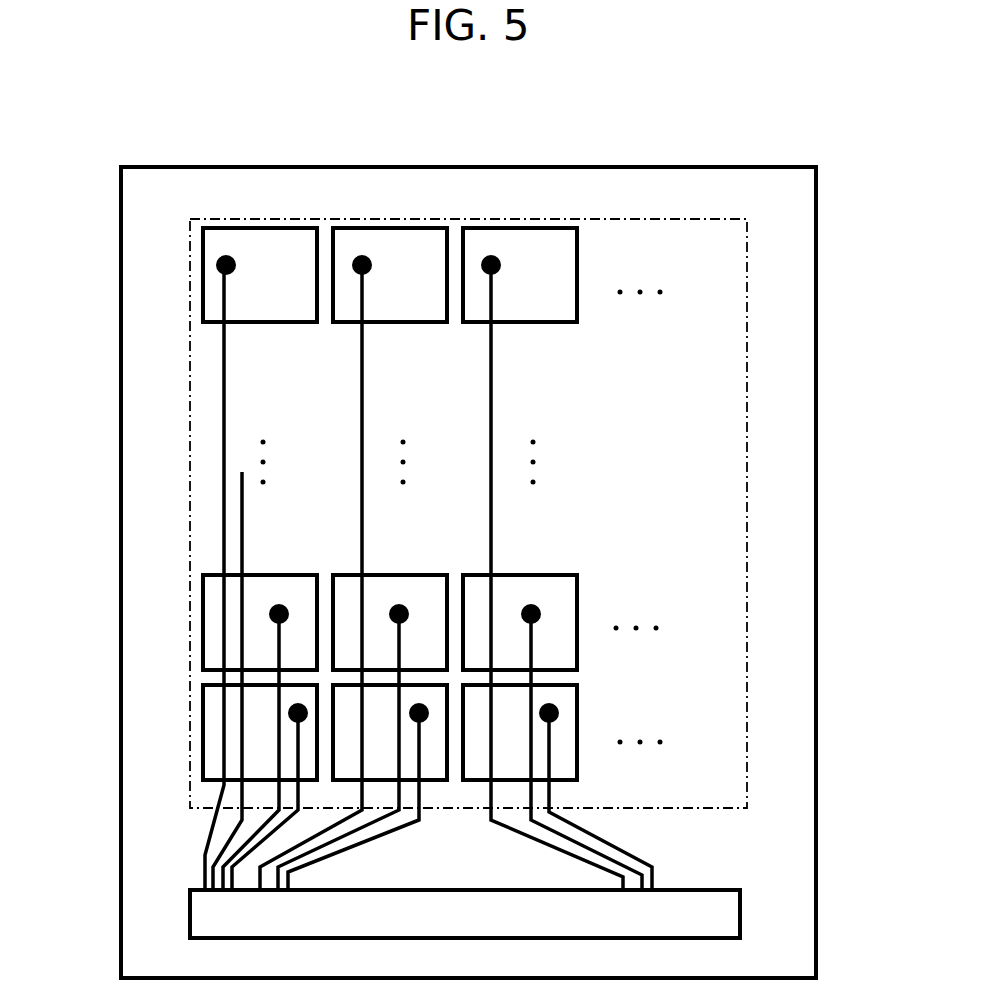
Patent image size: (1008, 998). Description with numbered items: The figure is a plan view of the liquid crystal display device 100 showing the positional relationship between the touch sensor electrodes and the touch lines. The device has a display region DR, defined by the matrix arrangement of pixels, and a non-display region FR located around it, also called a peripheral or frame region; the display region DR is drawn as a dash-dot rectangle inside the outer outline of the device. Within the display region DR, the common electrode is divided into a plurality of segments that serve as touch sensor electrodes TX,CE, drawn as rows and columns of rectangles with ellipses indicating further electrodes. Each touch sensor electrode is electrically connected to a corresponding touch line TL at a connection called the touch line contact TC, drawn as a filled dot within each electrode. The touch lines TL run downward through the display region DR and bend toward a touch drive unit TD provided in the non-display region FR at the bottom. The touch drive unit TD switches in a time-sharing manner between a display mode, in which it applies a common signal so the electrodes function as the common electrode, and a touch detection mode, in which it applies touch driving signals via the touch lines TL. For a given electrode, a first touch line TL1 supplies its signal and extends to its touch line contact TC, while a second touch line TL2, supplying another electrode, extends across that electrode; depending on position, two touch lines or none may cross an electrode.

The liquid crystal display device 100 is at (877, 218).
The display region DR is at (633, 219).
The non-display region FR is at (793, 272).
The touch sensor electrodes / common electrode TX,CE is at (203, 304).
The touch line contact TC is at (210, 263).
The touch line TL is at (224, 388).
The first touch line TL1 is at (533, 662).
The second touch line TL2 is at (495, 548).
The touch drive unit TD is at (190, 908).